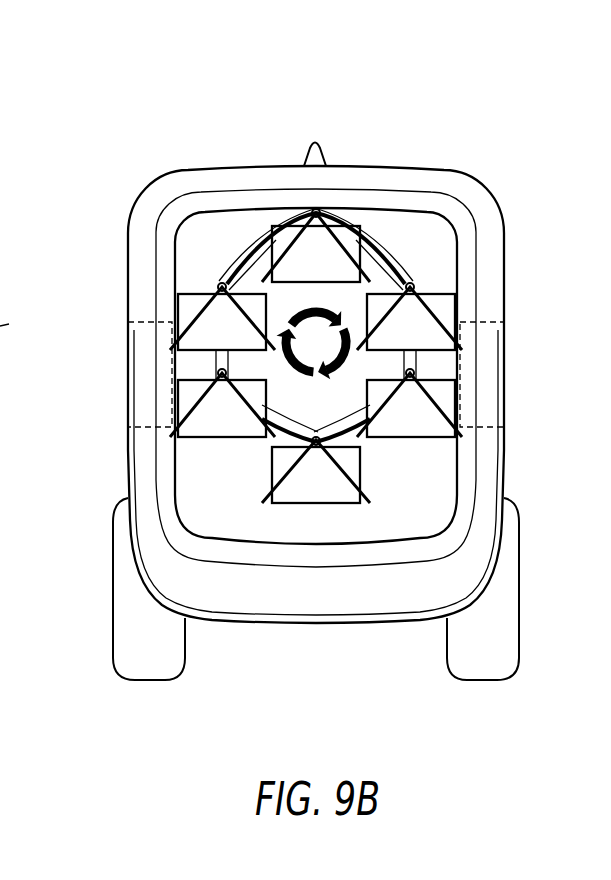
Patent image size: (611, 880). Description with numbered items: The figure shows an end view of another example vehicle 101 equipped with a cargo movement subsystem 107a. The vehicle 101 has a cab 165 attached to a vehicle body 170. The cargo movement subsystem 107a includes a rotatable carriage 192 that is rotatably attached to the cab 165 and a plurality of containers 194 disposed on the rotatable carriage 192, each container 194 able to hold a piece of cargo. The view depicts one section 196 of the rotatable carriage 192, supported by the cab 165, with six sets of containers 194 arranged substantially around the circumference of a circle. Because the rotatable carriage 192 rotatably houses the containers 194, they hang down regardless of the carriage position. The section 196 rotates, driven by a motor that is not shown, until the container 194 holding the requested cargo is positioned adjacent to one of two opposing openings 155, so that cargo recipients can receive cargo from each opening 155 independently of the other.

The vehicle 101 is at (69, 116).
The cargo movement subsystem 107a is at (276, 444).
The openings 155 is at (144, 370).
The cab 165 is at (429, 192).
The vehicle body 170 is at (343, 634).
The rotatable carriage 192 is at (397, 266).
The containers 194 is at (303, 254).
The section 196 is at (386, 231).